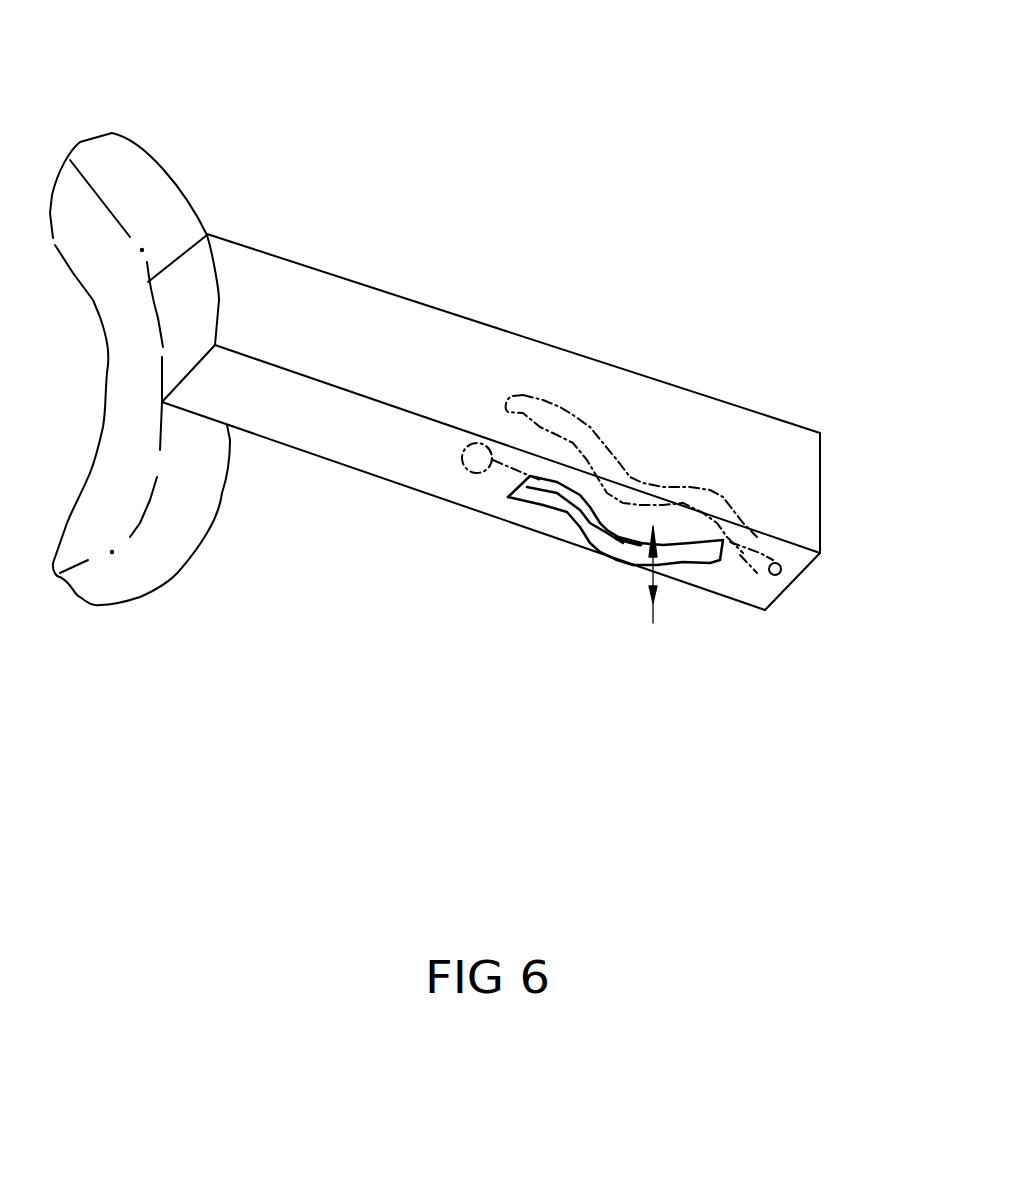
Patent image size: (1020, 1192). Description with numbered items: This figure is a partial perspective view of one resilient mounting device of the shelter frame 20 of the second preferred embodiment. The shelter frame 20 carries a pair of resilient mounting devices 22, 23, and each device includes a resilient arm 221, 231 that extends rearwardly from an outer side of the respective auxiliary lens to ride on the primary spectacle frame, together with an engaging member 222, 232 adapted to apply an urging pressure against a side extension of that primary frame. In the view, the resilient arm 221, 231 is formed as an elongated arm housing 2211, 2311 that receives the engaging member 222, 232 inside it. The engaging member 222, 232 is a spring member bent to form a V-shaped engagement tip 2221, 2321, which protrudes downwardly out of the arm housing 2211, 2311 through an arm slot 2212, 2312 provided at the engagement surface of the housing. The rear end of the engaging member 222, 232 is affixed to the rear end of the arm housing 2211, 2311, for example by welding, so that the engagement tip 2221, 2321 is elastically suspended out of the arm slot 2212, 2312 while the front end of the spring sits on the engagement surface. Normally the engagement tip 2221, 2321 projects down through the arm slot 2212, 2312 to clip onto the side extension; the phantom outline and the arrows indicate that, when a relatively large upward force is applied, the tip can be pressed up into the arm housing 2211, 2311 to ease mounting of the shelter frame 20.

The shelter frame 20 is at (146, 97).
The resilient mounting device 22 is at (533, 474).
The resilient mounting device 23 is at (533, 474).
The resilient arm 221 is at (522, 393).
The resilient arm 231 is at (522, 393).
The arm housing 2211 is at (522, 333).
The arm housing 2311 is at (598, 382).
The arm slot 2212 is at (402, 597).
The arm slot 2312 is at (528, 496).
The engaging member 222 is at (576, 603).
The engaging member 232 is at (576, 603).
The V-shaped engagement tip 2221 is at (585, 616).
The V-shaped engagement tip 2321 is at (585, 527).